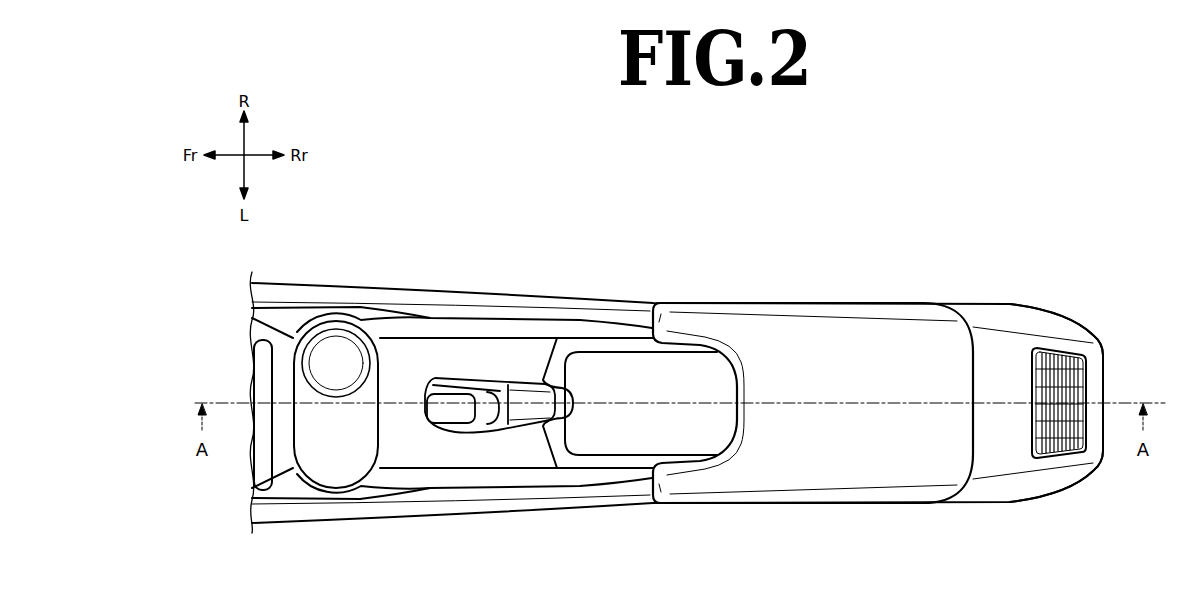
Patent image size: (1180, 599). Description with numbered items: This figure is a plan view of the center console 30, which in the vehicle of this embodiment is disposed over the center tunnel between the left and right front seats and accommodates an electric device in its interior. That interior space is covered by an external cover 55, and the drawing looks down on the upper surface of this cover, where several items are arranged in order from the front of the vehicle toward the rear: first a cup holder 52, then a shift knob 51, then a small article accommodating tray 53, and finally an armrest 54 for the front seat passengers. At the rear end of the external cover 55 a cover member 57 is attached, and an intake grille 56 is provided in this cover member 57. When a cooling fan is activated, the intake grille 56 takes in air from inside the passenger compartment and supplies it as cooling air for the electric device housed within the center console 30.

The center console 30 is at (985, 238).
The shift knob 51 is at (482, 393).
The cup holder 52 is at (341, 352).
The small article accommodating tray 53 is at (617, 375).
The armrest 54 is at (822, 352).
The external cover 55 is at (553, 502).
The intake grille 56 is at (1068, 356).
The cover member 57 is at (1020, 487).